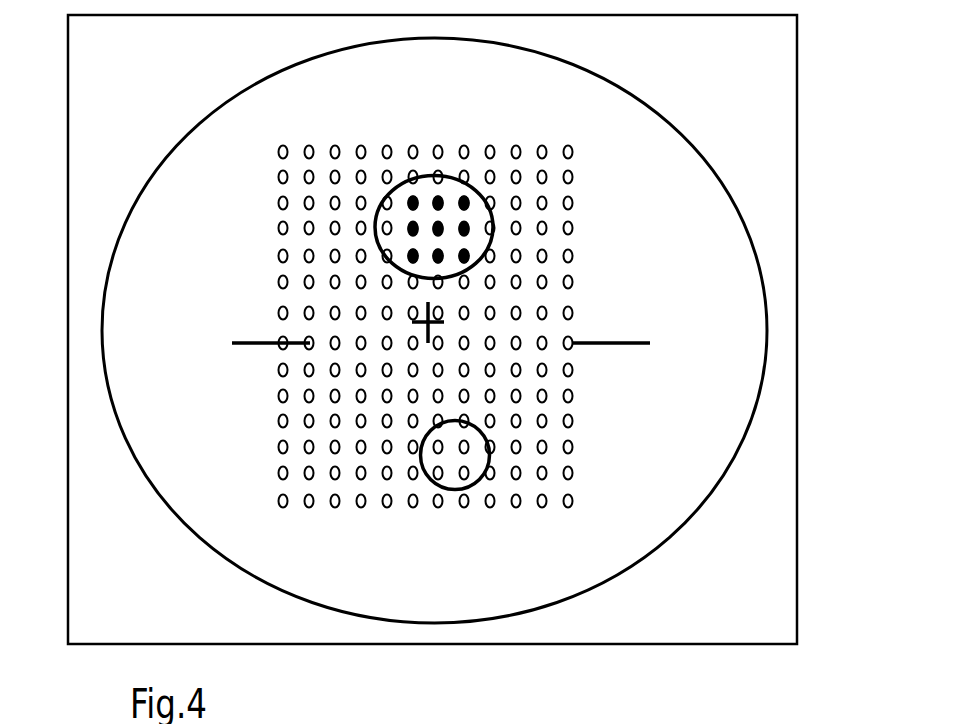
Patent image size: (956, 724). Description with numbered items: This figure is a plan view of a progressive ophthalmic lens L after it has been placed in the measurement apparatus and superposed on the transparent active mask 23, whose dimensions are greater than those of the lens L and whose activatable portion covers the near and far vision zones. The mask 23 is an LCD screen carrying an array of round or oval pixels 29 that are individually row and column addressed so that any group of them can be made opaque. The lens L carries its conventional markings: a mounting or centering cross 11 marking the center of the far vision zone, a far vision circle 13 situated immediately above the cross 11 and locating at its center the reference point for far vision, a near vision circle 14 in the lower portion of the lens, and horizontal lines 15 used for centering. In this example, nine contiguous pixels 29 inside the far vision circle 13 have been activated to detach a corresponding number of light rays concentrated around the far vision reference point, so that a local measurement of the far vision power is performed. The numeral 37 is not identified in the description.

The mounting cross 11 is at (427, 334).
The far vision circle 13 is at (446, 175).
The near vision circle 14 is at (430, 481).
The horizontal line 15 is at (243, 345).
The active mask 23 is at (786, 93).
The pixels 29 is at (434, 195).
The sheet 37 is at (477, 710).
The lens L is at (648, 107).